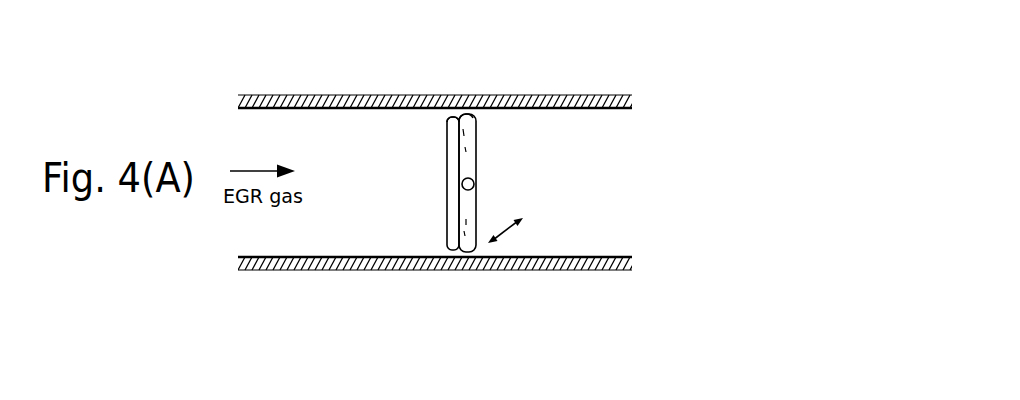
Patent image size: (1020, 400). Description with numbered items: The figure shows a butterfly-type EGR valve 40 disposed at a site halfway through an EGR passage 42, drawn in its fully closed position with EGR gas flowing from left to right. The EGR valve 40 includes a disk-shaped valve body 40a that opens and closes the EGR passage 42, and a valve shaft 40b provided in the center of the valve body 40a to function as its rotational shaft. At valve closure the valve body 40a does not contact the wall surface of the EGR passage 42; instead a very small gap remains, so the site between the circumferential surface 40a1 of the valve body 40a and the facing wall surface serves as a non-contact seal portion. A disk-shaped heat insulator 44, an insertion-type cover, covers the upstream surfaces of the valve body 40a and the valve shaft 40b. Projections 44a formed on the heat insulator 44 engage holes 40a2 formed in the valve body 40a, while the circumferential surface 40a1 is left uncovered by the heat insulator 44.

The EGR valve 40 is at (515, 190).
The valve body 40a is at (576, 190).
The circumferential surface 40a1 is at (472, 113).
The holes 40a2 is at (404, 66).
The valve shaft 40b is at (474, 183).
The EGR passage 42 is at (569, 130).
The heat insulator 44 is at (452, 200).
The projections 44a is at (452, 97).